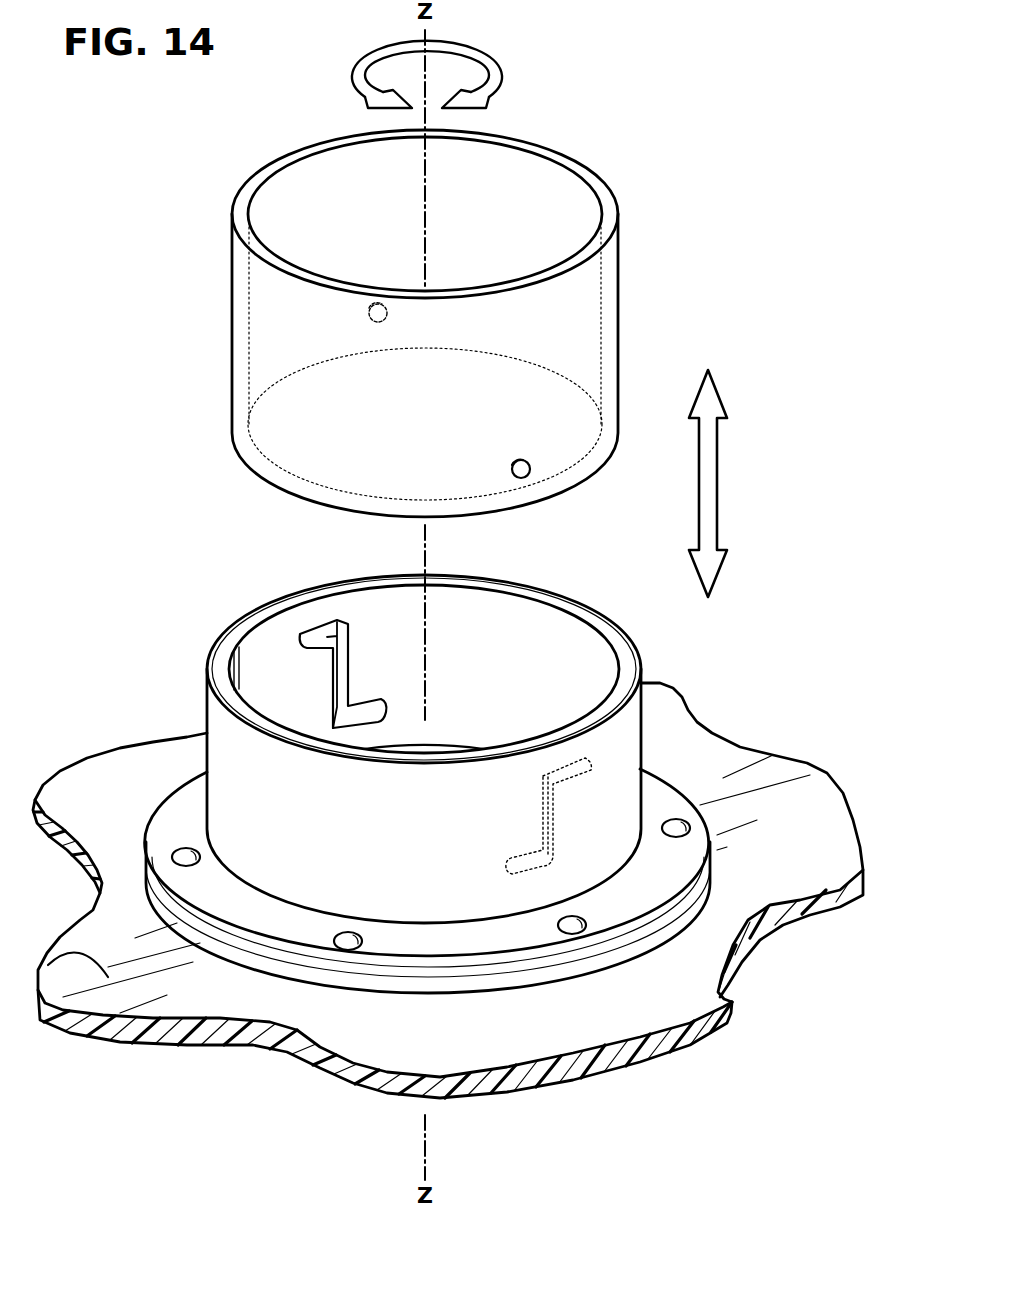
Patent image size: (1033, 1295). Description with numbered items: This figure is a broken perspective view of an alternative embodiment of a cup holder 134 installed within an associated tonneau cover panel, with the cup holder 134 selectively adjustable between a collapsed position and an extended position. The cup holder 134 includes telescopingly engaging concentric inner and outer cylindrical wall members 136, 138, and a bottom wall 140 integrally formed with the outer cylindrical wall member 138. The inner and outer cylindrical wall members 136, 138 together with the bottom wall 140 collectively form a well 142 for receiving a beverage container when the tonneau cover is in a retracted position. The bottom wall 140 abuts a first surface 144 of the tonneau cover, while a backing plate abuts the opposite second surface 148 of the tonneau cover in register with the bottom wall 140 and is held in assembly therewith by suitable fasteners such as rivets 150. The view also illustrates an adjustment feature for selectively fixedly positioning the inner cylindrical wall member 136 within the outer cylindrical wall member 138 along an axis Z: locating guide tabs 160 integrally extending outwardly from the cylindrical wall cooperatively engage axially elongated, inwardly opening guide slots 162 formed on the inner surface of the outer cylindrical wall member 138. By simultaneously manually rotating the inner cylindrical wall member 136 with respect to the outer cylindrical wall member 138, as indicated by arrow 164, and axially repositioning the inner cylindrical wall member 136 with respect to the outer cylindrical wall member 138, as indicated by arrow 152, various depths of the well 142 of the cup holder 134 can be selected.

The cup holder 134 is at (135, 262).
The inner cylindrical wall member 136 is at (578, 293).
The outer cylindrical wall member 138 is at (628, 730).
The bottom wall 140 is at (607, 912).
The well 142 is at (253, 665).
The first surface of the tonneau cover 144 is at (60, 1000).
The second surface of the tonneau cover 148 is at (647, 1062).
The rivets 150 is at (185, 855).
The arrow 152 is at (710, 490).
The locating guide tabs 160 is at (366, 305).
The guide slots 162 is at (350, 627).
The arrow 164 is at (470, 57).